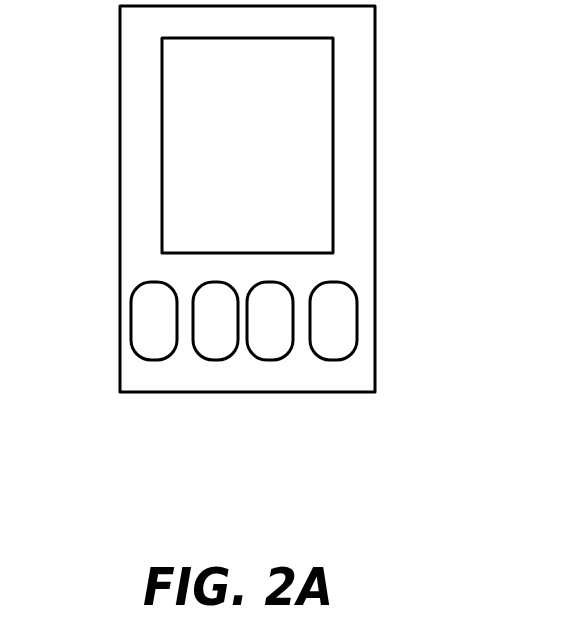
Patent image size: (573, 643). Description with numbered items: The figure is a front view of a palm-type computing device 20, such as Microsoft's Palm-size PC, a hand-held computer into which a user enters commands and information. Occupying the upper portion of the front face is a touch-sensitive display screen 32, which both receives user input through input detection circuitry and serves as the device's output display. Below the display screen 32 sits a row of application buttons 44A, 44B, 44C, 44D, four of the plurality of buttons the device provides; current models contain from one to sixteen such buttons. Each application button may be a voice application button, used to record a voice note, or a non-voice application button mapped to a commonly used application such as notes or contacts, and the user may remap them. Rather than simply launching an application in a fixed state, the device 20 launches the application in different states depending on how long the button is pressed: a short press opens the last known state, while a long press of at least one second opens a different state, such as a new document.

The palm-type computing device 20 is at (416, 54).
The touch-sensitive display screen 32 is at (334, 143).
The application button 44A is at (131, 306).
The application button 44B is at (219, 360).
The application button 44C is at (272, 360).
The application button 44D is at (357, 322).